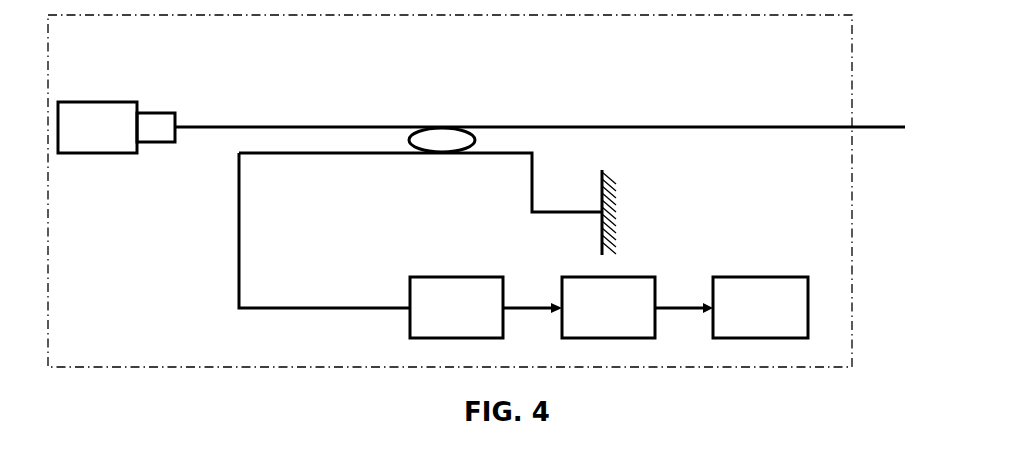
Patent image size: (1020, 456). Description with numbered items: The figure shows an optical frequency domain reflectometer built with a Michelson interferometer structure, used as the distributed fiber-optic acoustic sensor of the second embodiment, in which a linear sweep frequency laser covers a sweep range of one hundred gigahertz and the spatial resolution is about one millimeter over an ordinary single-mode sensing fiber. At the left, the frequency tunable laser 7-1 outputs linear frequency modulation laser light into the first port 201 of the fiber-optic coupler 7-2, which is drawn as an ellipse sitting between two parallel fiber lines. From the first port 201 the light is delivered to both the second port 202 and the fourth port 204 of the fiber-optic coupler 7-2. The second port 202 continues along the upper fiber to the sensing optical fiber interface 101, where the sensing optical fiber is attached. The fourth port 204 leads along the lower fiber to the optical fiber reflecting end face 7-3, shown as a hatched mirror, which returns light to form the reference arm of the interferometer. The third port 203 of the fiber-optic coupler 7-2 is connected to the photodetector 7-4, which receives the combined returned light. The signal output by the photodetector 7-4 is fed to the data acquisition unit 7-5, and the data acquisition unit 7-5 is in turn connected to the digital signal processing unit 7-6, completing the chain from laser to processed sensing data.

The frequency tunable laser 7-1 is at (87, 100).
The fiber-optic coupler 7-2 is at (473, 111).
The optical fiber reflecting end face 7-3 is at (615, 217).
The photodetector 7-4 is at (415, 276).
The data acquisition unit 7-5 is at (613, 276).
The digital signal processing unit 7-6 is at (727, 276).
The sensing optical fiber interface 101 is at (862, 127).
The first port 201 is at (425, 120).
The second port 202 is at (469, 120).
The third port 203 is at (421, 158).
The fourth port 204 is at (465, 158).